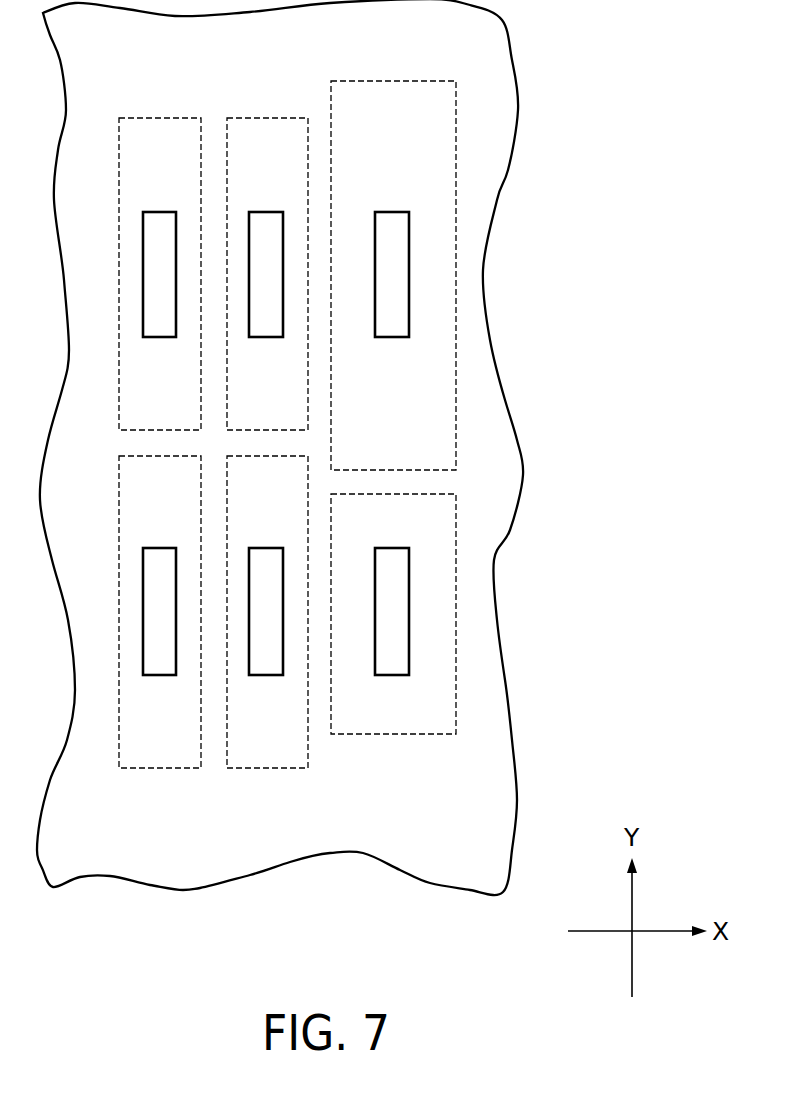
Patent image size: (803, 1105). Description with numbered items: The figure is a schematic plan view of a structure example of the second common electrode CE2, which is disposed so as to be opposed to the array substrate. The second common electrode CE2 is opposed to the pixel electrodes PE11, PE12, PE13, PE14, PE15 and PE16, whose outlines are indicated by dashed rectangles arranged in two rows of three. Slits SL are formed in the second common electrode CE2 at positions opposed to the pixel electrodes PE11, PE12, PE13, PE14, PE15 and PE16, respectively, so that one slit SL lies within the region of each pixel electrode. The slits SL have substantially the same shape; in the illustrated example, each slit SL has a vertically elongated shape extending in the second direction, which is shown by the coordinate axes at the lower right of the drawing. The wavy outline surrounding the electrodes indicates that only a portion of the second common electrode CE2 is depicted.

The second common electrode CE2 is at (98, 868).
The pixel electrode PE11 is at (168, 118).
The pixel electrode PE12 is at (275, 118).
The pixel electrode PE13 is at (401, 81).
The pixel electrode PE14 is at (163, 768).
The pixel electrode PE15 is at (270, 768).
The pixel electrode PE16 is at (396, 734).
The slit SL is at (159, 338).